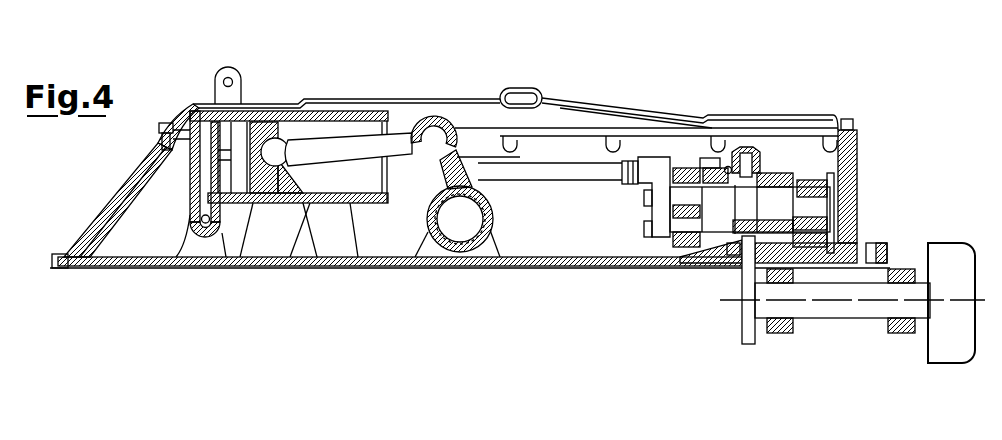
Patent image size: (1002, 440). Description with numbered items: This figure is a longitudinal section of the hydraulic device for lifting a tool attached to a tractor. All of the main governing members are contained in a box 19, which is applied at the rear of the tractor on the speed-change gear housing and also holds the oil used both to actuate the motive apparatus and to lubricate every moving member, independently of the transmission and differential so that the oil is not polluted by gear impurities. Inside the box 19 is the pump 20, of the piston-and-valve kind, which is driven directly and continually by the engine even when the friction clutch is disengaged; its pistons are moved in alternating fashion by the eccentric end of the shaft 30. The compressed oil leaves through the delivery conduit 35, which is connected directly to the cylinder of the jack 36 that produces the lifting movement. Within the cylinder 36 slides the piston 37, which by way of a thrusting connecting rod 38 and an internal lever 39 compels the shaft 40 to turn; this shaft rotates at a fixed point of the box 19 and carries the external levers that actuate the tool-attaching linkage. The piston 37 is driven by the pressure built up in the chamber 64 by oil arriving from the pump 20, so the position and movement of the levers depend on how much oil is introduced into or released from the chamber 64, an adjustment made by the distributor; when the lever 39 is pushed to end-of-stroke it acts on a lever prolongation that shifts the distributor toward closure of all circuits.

The box 19 is at (560, 208).
The pump 20 is at (778, 165).
The shaft 30 is at (780, 200).
The delivery conduit 35 is at (192, 175).
The jack cylinder 36 is at (232, 119).
The piston 37 is at (272, 125).
The thrusting connecting rod 38 is at (341, 148).
The internal lever 39 is at (438, 120).
The shaft 40 is at (465, 208).
The chamber 64 is at (237, 140).